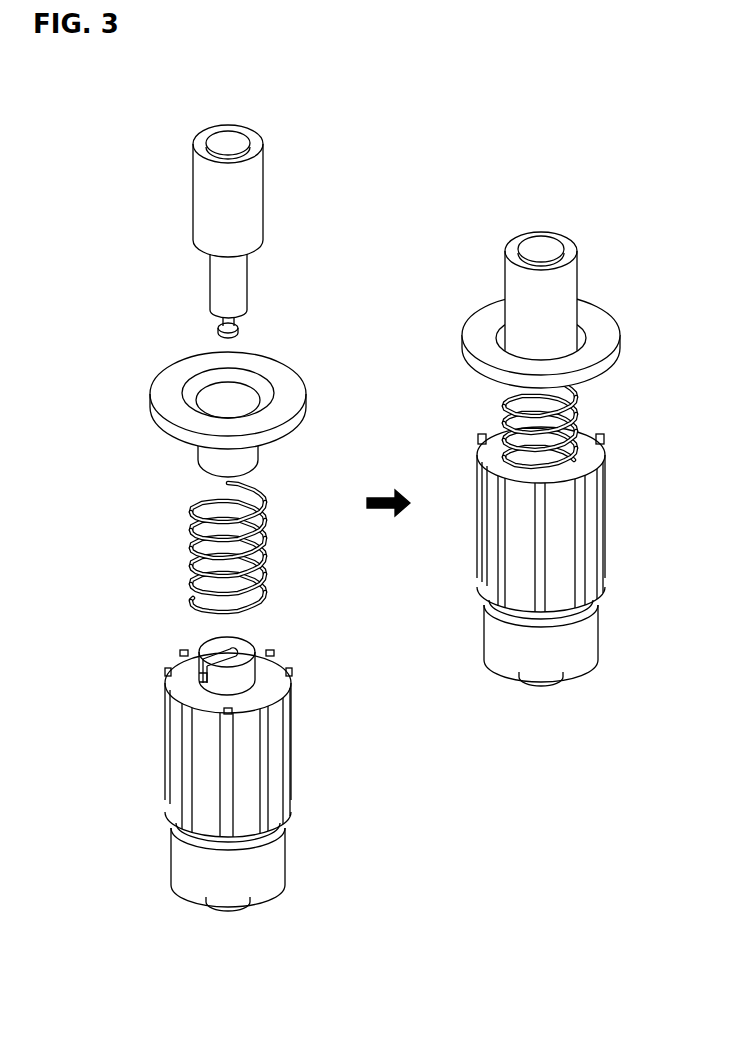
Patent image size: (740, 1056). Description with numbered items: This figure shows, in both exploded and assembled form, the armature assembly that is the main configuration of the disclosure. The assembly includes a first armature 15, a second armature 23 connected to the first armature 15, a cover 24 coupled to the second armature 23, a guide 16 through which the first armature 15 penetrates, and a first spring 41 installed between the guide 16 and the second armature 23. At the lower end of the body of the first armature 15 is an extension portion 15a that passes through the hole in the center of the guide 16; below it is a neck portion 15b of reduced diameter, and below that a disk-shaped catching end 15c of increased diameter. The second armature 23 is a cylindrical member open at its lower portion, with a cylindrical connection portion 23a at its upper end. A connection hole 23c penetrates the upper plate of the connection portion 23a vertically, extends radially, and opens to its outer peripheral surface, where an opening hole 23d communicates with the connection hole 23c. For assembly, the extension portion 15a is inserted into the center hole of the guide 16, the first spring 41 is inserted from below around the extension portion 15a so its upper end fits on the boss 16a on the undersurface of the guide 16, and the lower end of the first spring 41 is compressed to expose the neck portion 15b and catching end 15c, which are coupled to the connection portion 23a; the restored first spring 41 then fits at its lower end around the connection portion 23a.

The first armature 15 is at (200, 200).
The extension portion 15a is at (212, 284).
The neck portion 15b is at (222, 324).
The catching end 15c is at (245, 330).
The guide 16 is at (152, 424).
The boss 16a is at (198, 459).
The first spring 41 is at (190, 530).
The second armature 23 is at (180, 742).
The connection portion 23a is at (255, 668).
The connection hole 23c is at (200, 664).
The opening hole 23d is at (199, 679).
The cover 24 is at (180, 850).